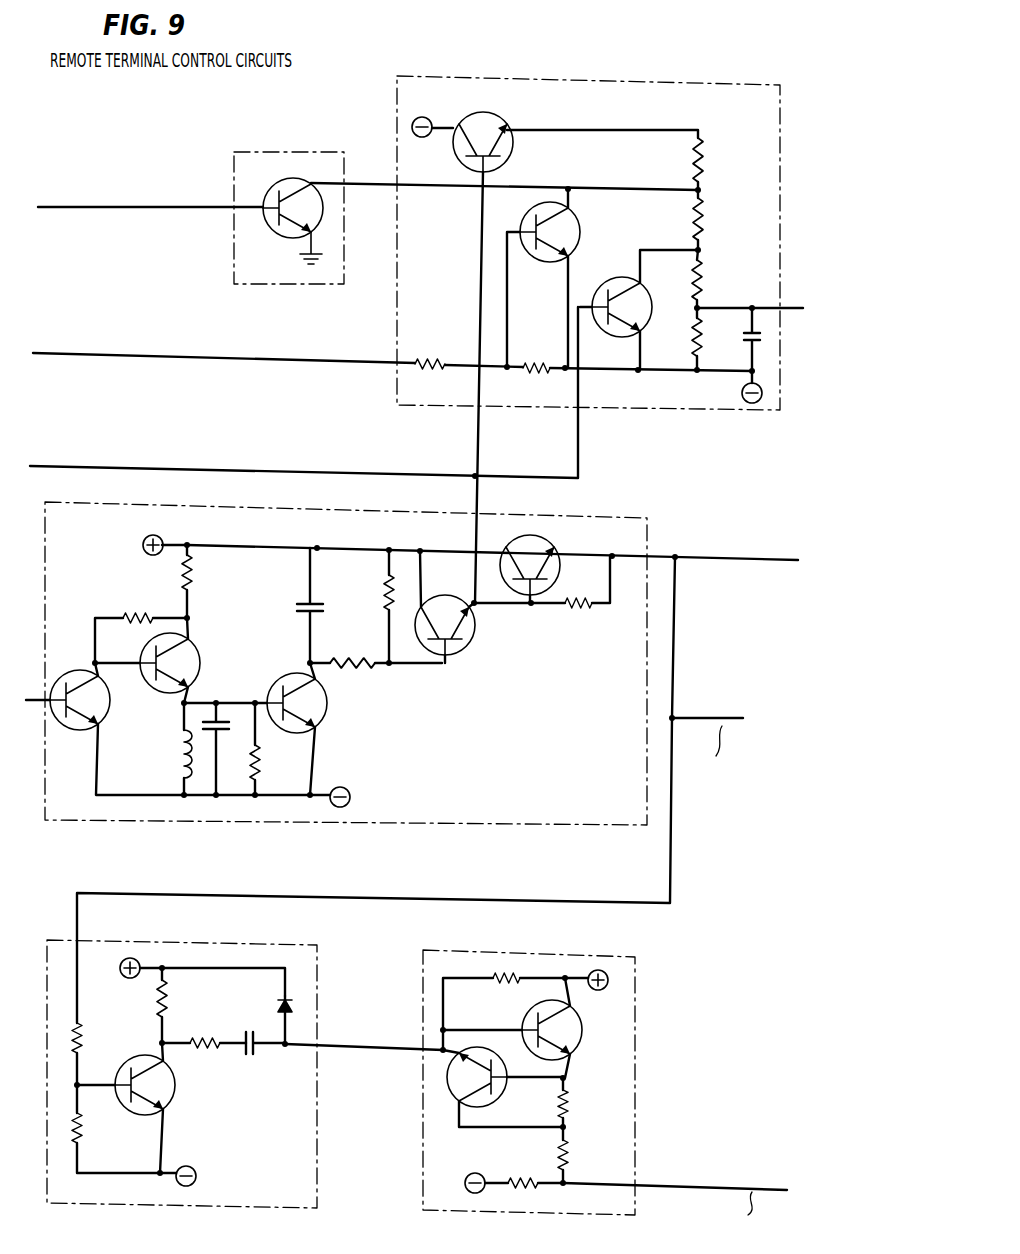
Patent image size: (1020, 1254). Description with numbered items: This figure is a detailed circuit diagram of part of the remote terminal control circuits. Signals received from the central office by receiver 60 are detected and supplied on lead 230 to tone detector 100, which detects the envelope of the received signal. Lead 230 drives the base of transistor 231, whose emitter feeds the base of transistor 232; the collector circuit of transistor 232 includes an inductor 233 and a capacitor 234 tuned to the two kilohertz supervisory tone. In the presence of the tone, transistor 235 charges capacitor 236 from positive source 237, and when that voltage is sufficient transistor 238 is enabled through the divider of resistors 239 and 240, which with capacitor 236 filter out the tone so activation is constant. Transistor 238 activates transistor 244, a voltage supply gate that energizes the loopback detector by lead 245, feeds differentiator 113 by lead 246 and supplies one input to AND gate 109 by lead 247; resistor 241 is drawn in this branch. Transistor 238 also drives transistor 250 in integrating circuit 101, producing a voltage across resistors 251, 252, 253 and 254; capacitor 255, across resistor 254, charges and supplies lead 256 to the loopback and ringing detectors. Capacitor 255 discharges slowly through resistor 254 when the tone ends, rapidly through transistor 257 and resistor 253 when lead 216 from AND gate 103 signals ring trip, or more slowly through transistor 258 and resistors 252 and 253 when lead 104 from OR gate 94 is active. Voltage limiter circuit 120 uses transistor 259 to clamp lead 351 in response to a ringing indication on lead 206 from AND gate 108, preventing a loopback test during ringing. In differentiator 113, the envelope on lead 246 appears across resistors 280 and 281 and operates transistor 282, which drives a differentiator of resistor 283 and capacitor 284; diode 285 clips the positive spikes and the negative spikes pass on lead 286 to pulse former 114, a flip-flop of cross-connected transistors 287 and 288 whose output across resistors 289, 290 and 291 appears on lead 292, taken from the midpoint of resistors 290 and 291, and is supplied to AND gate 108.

The tone detector 100 is at (614, 518).
The integrating circuit 101 is at (756, 88).
The AND gate 103 is at (106, 455).
The lead 104 is at (148, 358).
The AND gate 108 is at (397, 710).
The AND gate 109 is at (737, 757).
The differentiator 113 is at (293, 948).
The pulse former 114 is at (623, 958).
The voltage limiter circuit 120 is at (321, 284).
The lead 206 is at (165, 208).
The lead 216 is at (582, 442).
The lead 230 is at (27, 700).
The transistor 231 is at (106, 712).
The transistor 232 is at (198, 650).
The inductor 233 is at (205, 749).
The capacitor 234 is at (230, 718).
The transistor 235 is at (322, 714).
The capacitor 236 is at (298, 605).
The positive source 237 is at (152, 544).
The transistor 238 is at (462, 650).
The resistor 239 is at (375, 606).
The resistor 240 is at (376, 650).
The resistor 241 is at (587, 582).
The transistor 244 is at (549, 552).
The lead 245 is at (762, 562).
The lead 246 is at (668, 870).
The lead 247 is at (724, 720).
The transistor 250 is at (498, 122).
The resistor 251 is at (646, 165).
The resistor 252 is at (685, 237).
The resistor 253 is at (710, 280).
The resistor 254 is at (682, 340).
The capacitor 255 is at (744, 340).
The lead 256 is at (772, 306).
The transistor 257 is at (615, 280).
The transistor 258 is at (584, 225).
The transistor 259 is at (284, 178).
The resistor 280 is at (89, 1055).
The resistor 281 is at (134, 1135).
The transistor 282 is at (176, 1102).
The resistor 283 is at (204, 1031).
The capacitor 284 is at (263, 1058).
The diode 285 is at (272, 1019).
The lead 286 is at (375, 1045).
The transistor 287 is at (494, 1102).
The transistor 288 is at (582, 1030).
The resistor 289 is at (578, 1102).
The resistor 290 is at (578, 1156).
The resistor 291 is at (514, 1172).
The lead 292 is at (724, 1190).
The lead 351 is at (368, 182).
The receiver 60 is at (133, 840).
The OR gate 94 is at (101, 345).